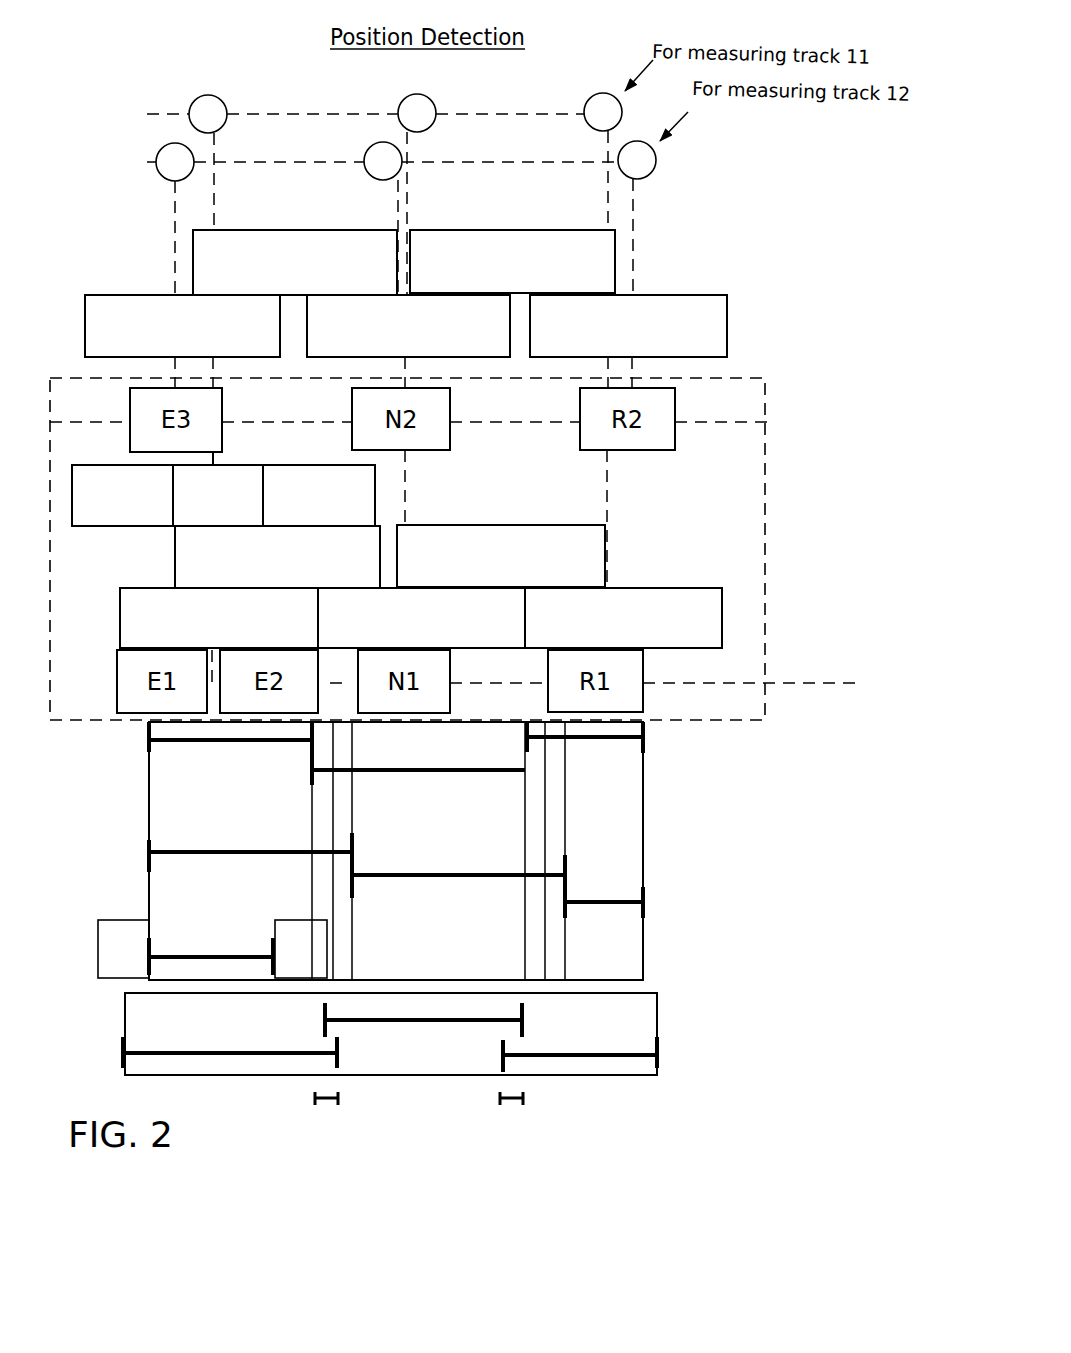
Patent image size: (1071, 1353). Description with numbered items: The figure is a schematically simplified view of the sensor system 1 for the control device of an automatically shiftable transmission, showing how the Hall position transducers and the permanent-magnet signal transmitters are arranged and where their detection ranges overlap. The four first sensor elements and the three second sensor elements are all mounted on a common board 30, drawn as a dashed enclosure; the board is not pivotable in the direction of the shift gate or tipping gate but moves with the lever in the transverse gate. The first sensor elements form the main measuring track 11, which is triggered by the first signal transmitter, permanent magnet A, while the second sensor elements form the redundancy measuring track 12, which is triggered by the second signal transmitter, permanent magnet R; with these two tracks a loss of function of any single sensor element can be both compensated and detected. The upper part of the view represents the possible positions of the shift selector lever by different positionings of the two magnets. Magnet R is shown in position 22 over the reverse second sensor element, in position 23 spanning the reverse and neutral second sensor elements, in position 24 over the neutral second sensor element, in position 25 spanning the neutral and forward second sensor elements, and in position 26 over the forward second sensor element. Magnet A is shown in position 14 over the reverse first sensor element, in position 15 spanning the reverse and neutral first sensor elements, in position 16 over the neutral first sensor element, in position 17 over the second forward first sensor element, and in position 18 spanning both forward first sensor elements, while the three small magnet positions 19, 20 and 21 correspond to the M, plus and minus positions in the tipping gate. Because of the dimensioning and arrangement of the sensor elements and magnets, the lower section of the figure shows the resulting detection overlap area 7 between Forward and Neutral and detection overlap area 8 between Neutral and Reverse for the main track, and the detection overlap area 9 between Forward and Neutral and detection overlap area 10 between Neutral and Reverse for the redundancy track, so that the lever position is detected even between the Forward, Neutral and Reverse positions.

The sensor system 1 is at (154, 209).
The detection overlap area 7 is at (332, 838).
The detection overlap area 8 is at (541, 837).
The detection overlap area 9 is at (324, 1111).
The detection overlap area 10 is at (516, 1111).
The main measuring track 11 is at (786, 675).
The redundancy measuring track 12 is at (786, 412).
The magnet A position 14 is at (728, 619).
The magnet A position 15 is at (612, 549).
The magnet A position 16 is at (469, 656).
The magnet A position 17 is at (383, 522).
The magnet A position 18 is at (117, 627).
The magnet A position 19 is at (226, 461).
The magnet A position 20 is at (342, 461).
The magnet A position 21 is at (129, 528).
The magnet R position 22 is at (741, 325).
The magnet R position 23 is at (449, 222).
The magnet R position 24 is at (453, 362).
The magnet R position 25 is at (250, 221).
The magnet R position 26 is at (133, 289).
The board 30 is at (711, 724).